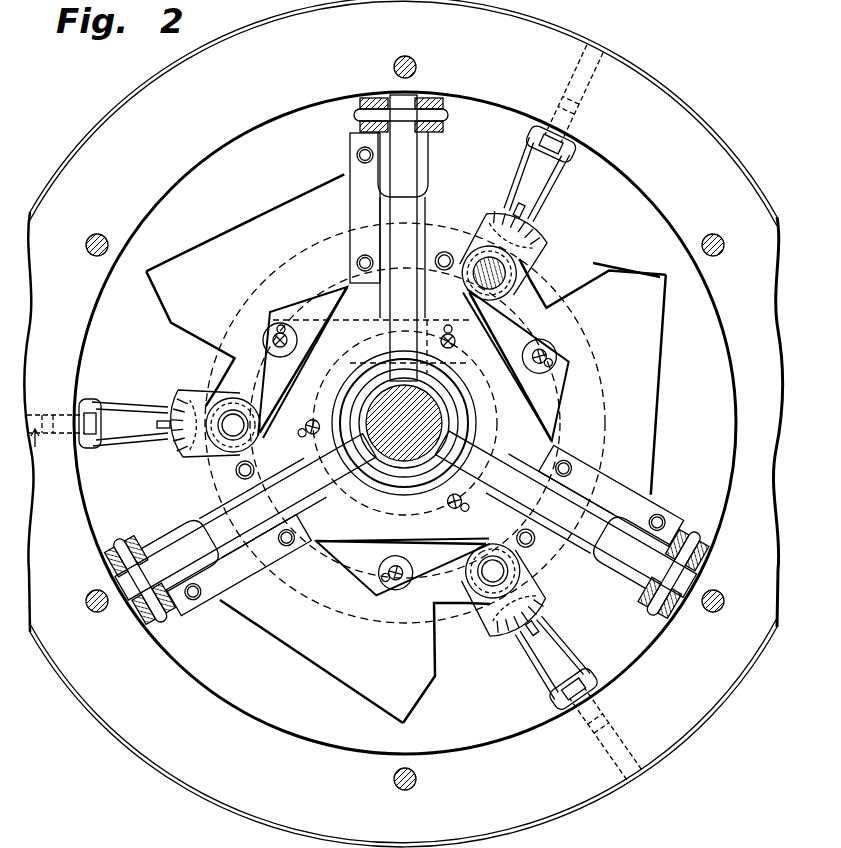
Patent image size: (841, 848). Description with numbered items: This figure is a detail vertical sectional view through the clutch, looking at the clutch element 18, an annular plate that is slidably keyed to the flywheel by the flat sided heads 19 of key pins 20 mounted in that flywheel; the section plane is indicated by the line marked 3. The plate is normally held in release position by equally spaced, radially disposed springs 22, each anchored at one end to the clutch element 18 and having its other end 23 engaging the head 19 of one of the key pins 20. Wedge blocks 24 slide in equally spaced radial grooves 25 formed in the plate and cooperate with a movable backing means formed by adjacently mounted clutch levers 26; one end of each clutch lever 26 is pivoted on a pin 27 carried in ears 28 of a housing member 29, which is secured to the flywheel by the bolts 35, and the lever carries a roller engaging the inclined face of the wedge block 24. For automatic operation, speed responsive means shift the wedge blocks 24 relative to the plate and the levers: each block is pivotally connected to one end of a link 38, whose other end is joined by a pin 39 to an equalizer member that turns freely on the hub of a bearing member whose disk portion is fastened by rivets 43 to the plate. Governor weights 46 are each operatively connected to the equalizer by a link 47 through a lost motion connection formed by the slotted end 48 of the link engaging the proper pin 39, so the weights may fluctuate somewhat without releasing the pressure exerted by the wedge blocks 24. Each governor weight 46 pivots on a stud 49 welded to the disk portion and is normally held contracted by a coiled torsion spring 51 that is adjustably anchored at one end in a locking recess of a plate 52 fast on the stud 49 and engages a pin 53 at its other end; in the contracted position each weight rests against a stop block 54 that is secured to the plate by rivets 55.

The section line 3 is at (34, 451).
The clutch element 18 is at (726, 462).
The flat sided heads 19 is at (90, 449).
The key pins 20 is at (52, 413).
The springs 22 is at (128, 450).
The end 23 is at (90, 405).
The wedge blocks 24 is at (422, 232).
The grooves 25 is at (163, 548).
The clutch levers 26 is at (407, 207).
The pin 27 is at (430, 116).
The ears 28 is at (358, 128).
The housing member 29 is at (232, 499).
The bolts 35 is at (415, 62).
The link 38 is at (427, 296).
The pin 39 is at (456, 345).
The rivets 43 is at (446, 258).
The governor weights 46 is at (216, 256).
The link 47 is at (341, 330).
The slotted end 48 is at (424, 334).
The stud 49 is at (230, 420).
The coiled torsion spring 51 is at (273, 391).
The plate 52 is at (183, 455).
The pin 53 is at (287, 335).
The stop block 54 is at (352, 204).
The rivets 55 is at (357, 156).